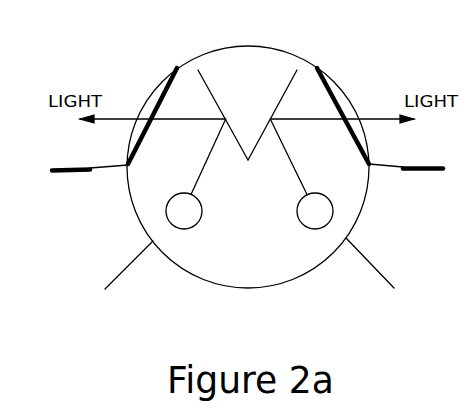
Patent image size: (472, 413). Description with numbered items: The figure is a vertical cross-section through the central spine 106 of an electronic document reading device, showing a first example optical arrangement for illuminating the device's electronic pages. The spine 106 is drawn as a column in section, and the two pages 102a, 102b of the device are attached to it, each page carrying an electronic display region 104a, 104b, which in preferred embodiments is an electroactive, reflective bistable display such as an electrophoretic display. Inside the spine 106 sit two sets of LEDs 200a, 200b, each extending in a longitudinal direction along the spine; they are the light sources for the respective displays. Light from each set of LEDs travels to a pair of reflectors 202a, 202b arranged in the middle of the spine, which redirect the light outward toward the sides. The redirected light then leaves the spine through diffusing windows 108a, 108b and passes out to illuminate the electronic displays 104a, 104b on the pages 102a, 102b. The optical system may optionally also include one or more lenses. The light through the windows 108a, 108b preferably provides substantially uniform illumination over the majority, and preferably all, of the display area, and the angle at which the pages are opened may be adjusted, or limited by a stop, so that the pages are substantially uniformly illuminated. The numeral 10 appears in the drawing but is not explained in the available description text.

The optical sensor system 10 is at (465, 194).
The page 102a is at (97, 248).
The page 102b is at (435, 246).
The electronic display region 104a is at (72, 177).
The electronic display region 104b is at (433, 172).
The central spine 106 is at (172, 292).
The diffusing window 108a is at (163, 90).
The diffusing window 108b is at (334, 97).
The set of LEDs 200a is at (192, 235).
The set of LEDs 200b is at (310, 238).
The reflector 202a is at (205, 78).
The reflector 202b is at (295, 78).